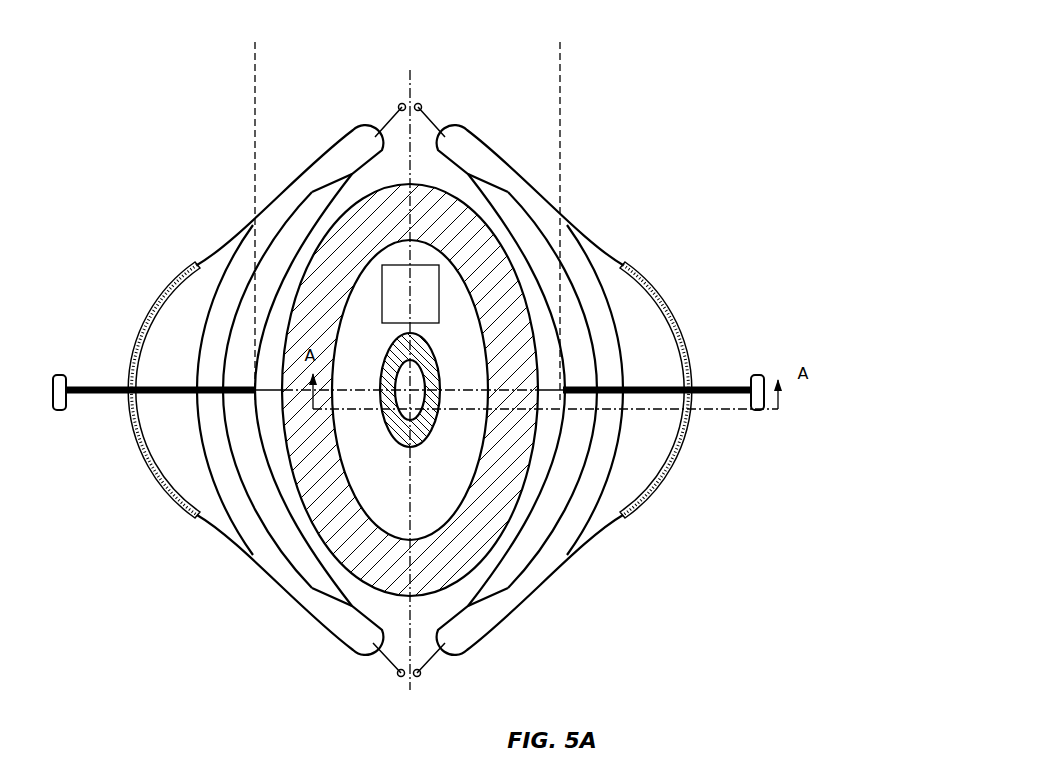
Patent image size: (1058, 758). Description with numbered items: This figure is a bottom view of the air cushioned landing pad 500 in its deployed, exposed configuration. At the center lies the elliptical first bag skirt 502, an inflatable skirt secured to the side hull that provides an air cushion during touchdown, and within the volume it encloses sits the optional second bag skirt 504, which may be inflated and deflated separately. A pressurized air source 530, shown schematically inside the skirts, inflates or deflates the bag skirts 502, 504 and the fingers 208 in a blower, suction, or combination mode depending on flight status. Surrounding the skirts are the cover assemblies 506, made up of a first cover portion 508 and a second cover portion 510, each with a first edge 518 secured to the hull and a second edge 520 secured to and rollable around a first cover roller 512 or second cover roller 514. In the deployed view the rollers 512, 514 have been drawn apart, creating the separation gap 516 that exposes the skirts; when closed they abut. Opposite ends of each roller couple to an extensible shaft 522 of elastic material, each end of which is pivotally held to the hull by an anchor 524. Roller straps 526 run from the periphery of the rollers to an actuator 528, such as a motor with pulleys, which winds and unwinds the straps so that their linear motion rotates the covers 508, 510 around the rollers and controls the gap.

The air cushioned landing pad 500 is at (731, 70).
The first bag skirt 502 is at (497, 208).
The second bag skirt 504 is at (427, 443).
The cover assemblies 506 is at (316, 150).
The first cover portion 508 is at (153, 374).
The second cover portion 510 is at (666, 366).
The first cover roller 512 is at (346, 626).
The second cover roller 514 is at (462, 628).
The separation gap 516 is at (257, 60).
The first edge 518 is at (648, 279).
The second edge 520 is at (536, 228).
The extensible shaft 522 is at (437, 116).
The anchor 524 is at (427, 101).
The roller strap 526 is at (708, 385).
The actuator 528 is at (765, 373).
The pressurized air source 530 is at (397, 302).
The fingers 208 is at (232, 756).